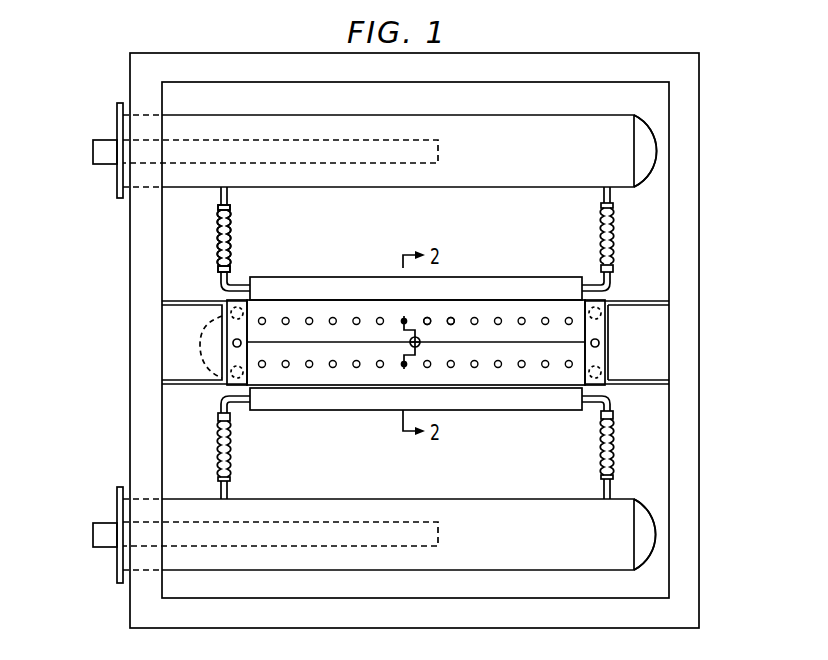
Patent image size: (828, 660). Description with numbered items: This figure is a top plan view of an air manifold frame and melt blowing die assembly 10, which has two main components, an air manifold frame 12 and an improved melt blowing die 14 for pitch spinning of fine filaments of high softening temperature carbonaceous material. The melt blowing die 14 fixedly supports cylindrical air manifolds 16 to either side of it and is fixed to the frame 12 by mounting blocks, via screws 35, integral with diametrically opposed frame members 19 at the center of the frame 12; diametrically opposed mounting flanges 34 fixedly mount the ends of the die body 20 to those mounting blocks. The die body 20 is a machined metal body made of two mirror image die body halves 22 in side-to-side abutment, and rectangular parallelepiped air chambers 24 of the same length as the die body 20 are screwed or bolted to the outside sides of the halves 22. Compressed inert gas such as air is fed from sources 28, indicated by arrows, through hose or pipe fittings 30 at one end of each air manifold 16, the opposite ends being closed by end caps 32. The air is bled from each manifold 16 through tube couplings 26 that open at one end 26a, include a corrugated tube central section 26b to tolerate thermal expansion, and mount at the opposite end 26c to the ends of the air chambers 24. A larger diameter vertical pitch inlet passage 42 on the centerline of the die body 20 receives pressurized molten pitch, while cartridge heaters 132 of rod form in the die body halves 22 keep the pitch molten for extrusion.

The air manifold frame and melt blowing die assembly 10 is at (486, 48).
The air manifold frame 12 is at (699, 319).
The melt blowing die 14 is at (505, 272).
The air manifolds 16 is at (437, 177).
The frame members 19 is at (174, 386).
The die body 20 is at (592, 308).
The die body halves 22 is at (363, 312).
The air chambers 24 is at (296, 292).
The tube couplings 26 is at (232, 233).
The tube coupling end 26a is at (219, 206).
The corrugated tube central section 26b is at (231, 249).
The tube coupling opposite end 26c is at (221, 288).
The compressed inert gas sources 28 is at (86, 153).
The hose or pipe fittings 30 is at (108, 166).
The end caps 32 is at (641, 165).
The mounting flanges 34 is at (238, 299).
The screws 35 is at (205, 350).
The pitch inlet passage 42 is at (420, 346).
The cartridge heaters 132 is at (428, 317).